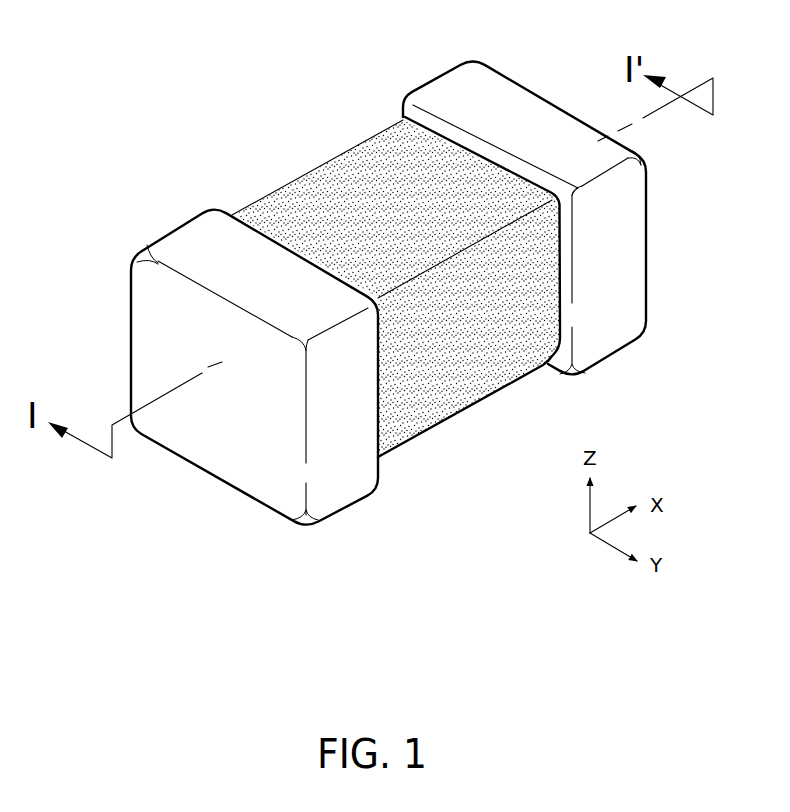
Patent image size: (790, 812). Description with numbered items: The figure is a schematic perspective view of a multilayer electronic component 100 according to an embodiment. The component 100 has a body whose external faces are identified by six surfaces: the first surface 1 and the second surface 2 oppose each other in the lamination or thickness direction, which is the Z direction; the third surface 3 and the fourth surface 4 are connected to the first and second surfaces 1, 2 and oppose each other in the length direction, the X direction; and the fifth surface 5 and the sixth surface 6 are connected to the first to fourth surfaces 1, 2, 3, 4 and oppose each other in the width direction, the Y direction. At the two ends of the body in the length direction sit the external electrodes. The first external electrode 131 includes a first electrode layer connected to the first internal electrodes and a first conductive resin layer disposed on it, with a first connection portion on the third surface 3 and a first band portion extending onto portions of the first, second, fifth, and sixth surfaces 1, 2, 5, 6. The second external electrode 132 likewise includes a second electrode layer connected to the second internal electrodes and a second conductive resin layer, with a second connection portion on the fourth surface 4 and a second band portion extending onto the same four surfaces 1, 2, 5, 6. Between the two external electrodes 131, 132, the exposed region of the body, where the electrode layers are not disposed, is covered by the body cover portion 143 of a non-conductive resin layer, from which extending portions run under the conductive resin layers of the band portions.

The multilayer electronic component 100 is at (190, 67).
The first surface 1 is at (430, 385).
The second surface 2 is at (402, 168).
The third surface 3 is at (223, 428).
The fourth surface 4 is at (600, 231).
The fifth surface 5 is at (486, 351).
The sixth surface 6 is at (345, 191).
The first external electrode 131 is at (193, 246).
The second external electrode 132 is at (445, 93).
The body cover portion 143 is at (267, 225).